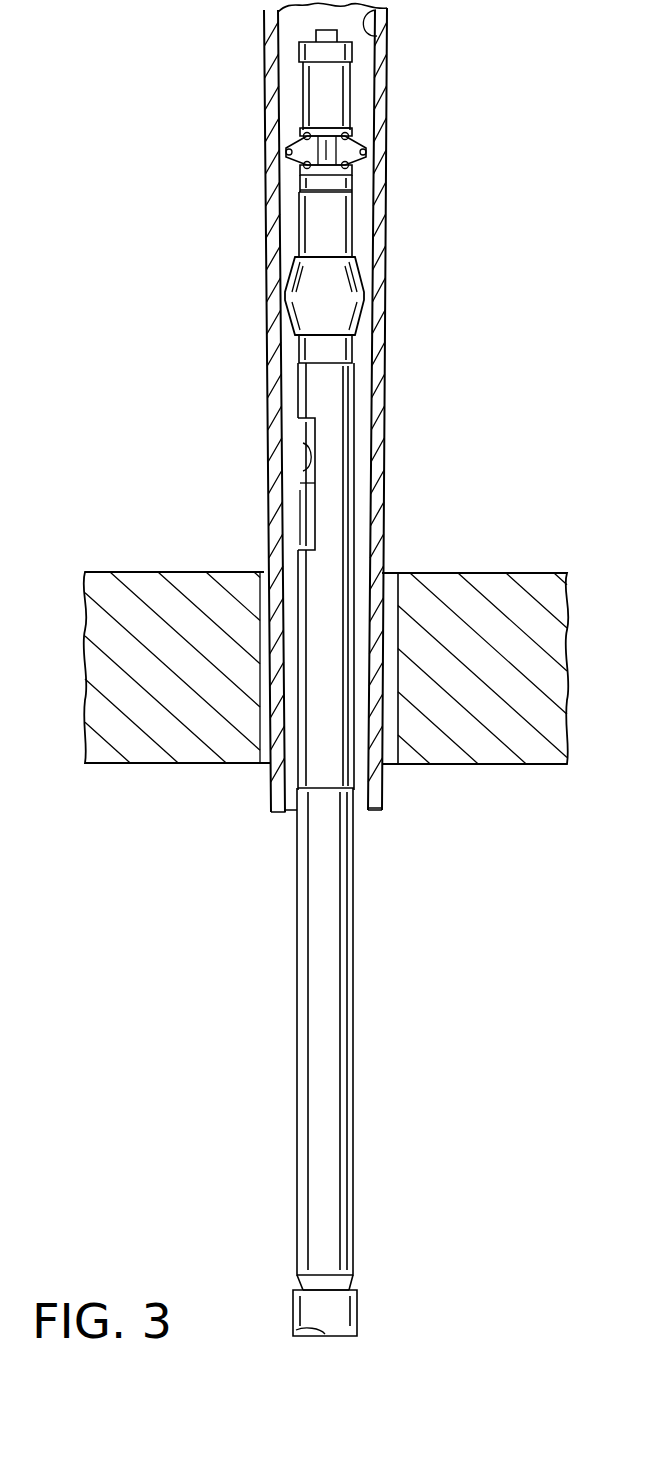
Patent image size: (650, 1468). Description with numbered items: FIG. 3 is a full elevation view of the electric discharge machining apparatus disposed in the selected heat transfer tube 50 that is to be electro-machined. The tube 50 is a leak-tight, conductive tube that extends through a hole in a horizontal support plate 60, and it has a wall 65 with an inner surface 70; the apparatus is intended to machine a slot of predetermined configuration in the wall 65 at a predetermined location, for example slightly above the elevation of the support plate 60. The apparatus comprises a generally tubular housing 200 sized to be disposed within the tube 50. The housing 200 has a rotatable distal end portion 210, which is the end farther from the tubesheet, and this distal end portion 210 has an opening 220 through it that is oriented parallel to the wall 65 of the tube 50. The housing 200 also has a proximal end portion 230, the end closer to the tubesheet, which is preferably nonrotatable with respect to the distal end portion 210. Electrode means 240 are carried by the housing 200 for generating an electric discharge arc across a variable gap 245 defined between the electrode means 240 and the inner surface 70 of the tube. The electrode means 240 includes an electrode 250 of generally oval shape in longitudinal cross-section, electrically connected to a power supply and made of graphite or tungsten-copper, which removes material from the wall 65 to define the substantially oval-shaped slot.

The heat transfer tube 50 is at (387, 100).
The support plate 60 is at (492, 575).
The wall 65 is at (268, 382).
The inner surface 70 is at (392, 8).
The housing 200 is at (343, 516).
The distal end portion 210 is at (341, 386).
The opening 220 is at (306, 452).
The proximal end portion 230 is at (343, 935).
The electrode means 240 is at (366, 283).
The variable gap 245 is at (289, 498).
The electrode 250 is at (300, 437).